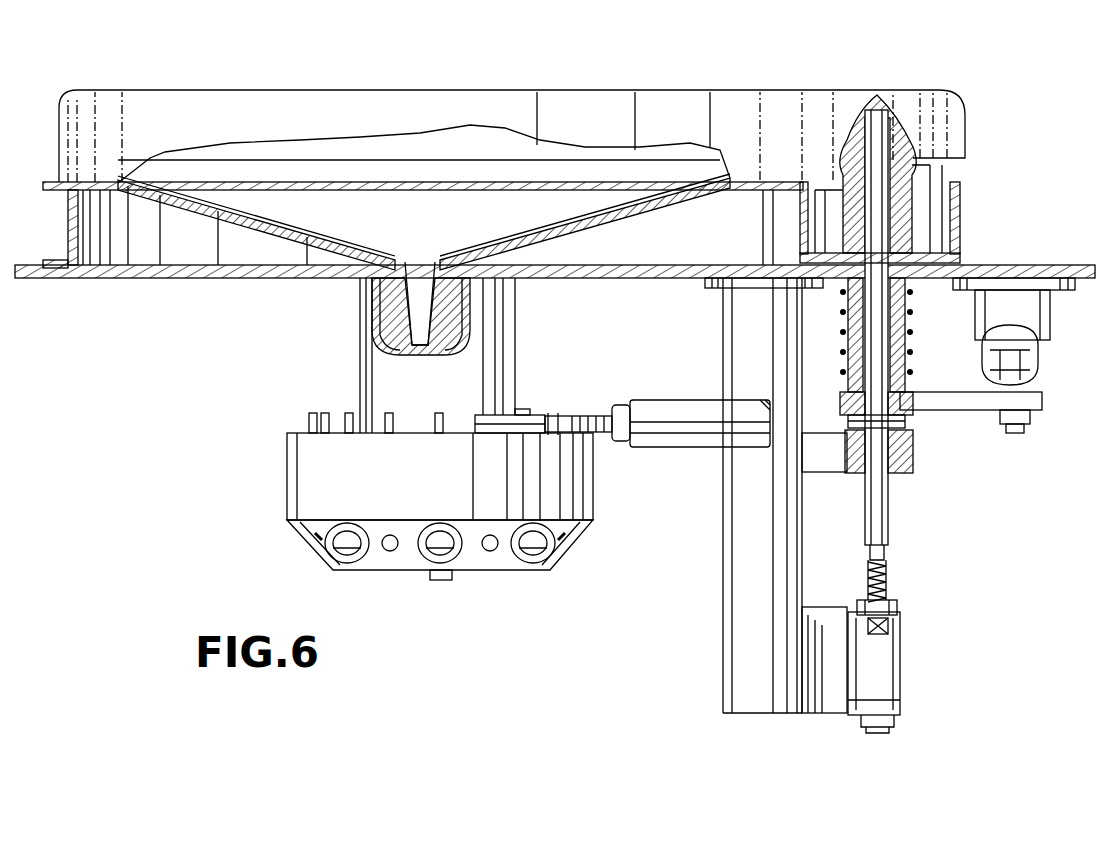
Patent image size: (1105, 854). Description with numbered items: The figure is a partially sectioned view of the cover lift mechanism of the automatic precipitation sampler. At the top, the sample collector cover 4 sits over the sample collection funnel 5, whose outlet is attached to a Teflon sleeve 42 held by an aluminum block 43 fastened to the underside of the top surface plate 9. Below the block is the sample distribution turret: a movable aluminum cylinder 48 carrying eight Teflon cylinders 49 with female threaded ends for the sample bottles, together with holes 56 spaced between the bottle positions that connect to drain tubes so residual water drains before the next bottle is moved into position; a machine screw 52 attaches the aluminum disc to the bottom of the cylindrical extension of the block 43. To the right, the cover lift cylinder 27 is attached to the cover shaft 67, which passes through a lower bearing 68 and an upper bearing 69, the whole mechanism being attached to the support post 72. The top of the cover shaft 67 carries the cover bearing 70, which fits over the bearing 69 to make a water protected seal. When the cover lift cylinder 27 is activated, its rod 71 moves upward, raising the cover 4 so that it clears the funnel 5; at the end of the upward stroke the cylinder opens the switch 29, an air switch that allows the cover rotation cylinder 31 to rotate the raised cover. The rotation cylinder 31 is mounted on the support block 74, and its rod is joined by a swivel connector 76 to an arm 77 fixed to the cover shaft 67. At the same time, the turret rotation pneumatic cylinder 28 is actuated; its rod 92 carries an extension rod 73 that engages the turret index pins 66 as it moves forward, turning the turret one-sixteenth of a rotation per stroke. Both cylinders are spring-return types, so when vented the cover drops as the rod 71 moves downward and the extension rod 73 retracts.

The sample collector cover 4 is at (107, 105).
The sample collection funnel 5 is at (215, 218).
The top surface plate 9 is at (133, 279).
The cover lift cylinder 27 is at (900, 672).
The turret rotation pneumatic cylinder 28 is at (660, 410).
The switch 29 is at (900, 618).
The cover rotation cylinder 31 is at (1036, 352).
The Teflon sleeve 42 is at (378, 312).
The aluminum block 43 is at (503, 330).
The movable aluminum cylinder 48 is at (580, 475).
The Teflon cylinders 49 is at (330, 565).
The machine screw 52 is at (440, 581).
The holes 56 is at (302, 545).
The turret index pins 66 is at (345, 388).
The cover shaft 67 is at (888, 500).
The bearing 68 is at (902, 450).
The bearing 69 is at (940, 258).
The cover bearing 70 is at (930, 138).
The rod 71 is at (888, 540).
The support post 72 is at (723, 612).
The extension rod 73 is at (536, 414).
The support block 74 is at (1040, 312).
The swivel connector 76 is at (1033, 370).
The arm 77 is at (970, 411).
The rod 92 is at (600, 417).